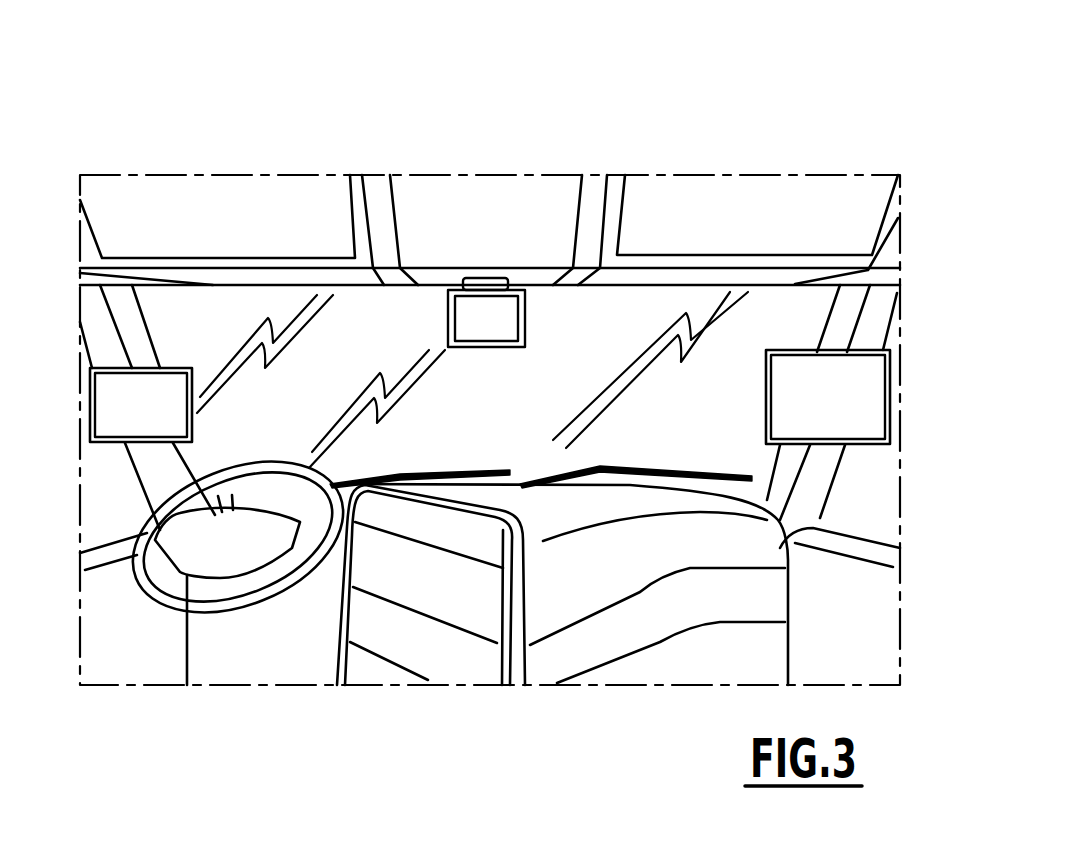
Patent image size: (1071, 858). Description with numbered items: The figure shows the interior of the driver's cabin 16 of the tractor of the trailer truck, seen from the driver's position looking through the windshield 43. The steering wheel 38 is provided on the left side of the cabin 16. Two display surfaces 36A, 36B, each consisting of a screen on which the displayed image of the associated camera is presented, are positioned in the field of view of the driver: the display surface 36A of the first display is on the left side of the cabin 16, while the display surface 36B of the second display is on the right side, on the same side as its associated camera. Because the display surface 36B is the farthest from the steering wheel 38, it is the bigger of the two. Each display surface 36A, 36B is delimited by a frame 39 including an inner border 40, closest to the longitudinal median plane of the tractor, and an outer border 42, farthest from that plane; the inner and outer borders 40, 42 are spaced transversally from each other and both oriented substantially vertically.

The cabin 16 is at (890, 124).
The display surface 36A is at (112, 403).
The display surface 36B is at (868, 422).
The steering wheel 38 is at (262, 470).
The frame 39 is at (172, 352).
The inner border 40 is at (192, 380).
The outer border 42 is at (88, 397).
The windshield 43 is at (360, 330).